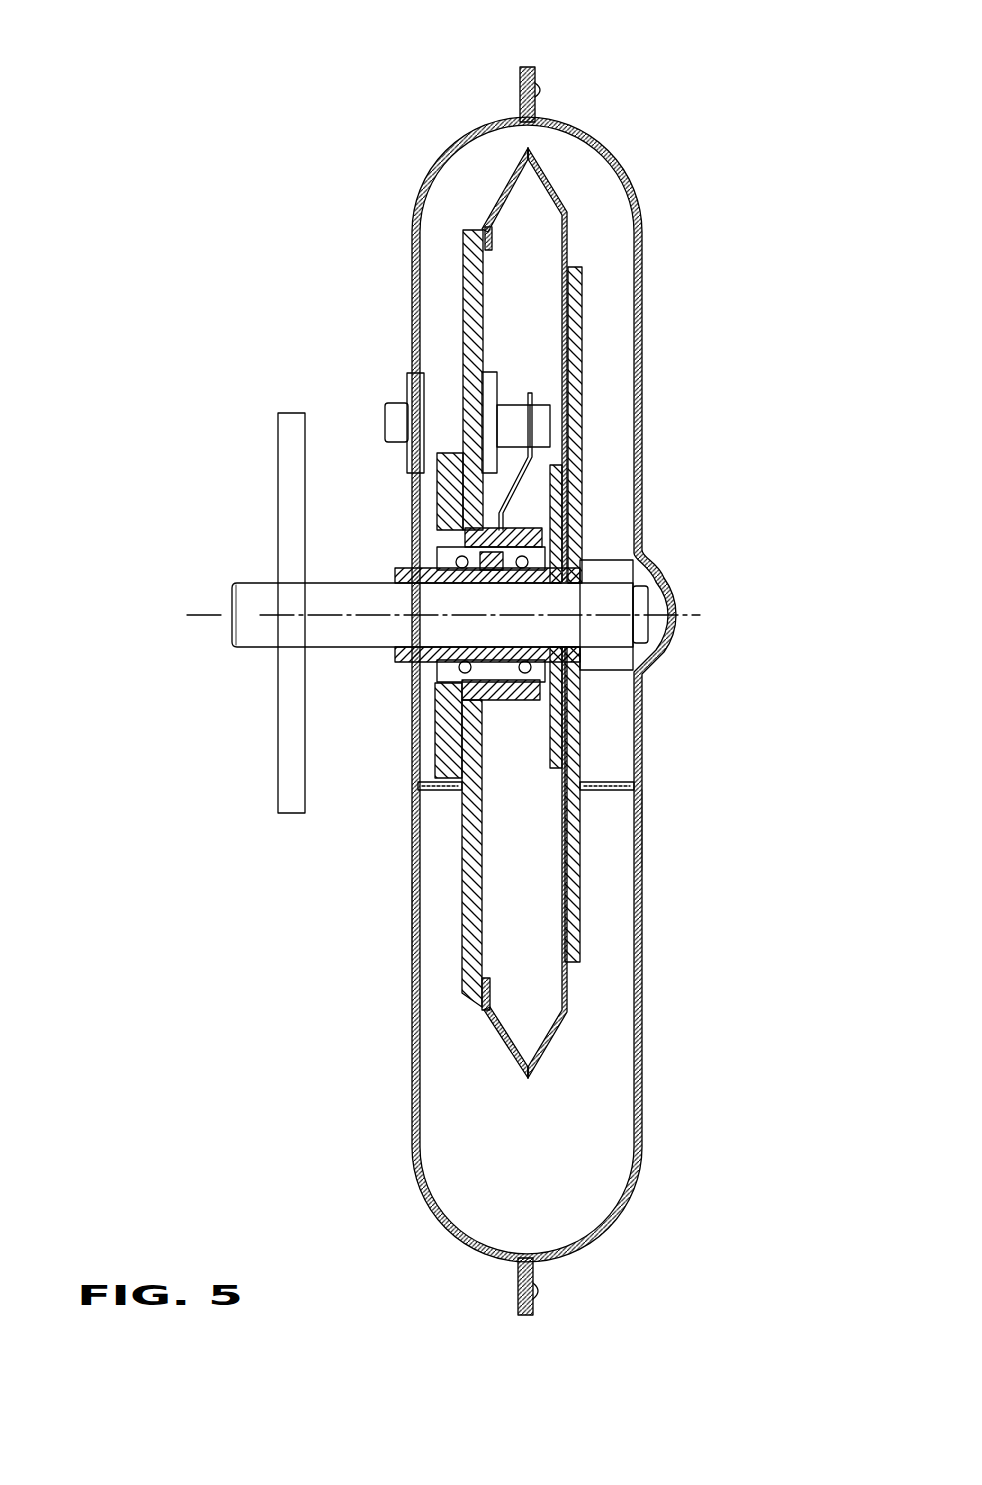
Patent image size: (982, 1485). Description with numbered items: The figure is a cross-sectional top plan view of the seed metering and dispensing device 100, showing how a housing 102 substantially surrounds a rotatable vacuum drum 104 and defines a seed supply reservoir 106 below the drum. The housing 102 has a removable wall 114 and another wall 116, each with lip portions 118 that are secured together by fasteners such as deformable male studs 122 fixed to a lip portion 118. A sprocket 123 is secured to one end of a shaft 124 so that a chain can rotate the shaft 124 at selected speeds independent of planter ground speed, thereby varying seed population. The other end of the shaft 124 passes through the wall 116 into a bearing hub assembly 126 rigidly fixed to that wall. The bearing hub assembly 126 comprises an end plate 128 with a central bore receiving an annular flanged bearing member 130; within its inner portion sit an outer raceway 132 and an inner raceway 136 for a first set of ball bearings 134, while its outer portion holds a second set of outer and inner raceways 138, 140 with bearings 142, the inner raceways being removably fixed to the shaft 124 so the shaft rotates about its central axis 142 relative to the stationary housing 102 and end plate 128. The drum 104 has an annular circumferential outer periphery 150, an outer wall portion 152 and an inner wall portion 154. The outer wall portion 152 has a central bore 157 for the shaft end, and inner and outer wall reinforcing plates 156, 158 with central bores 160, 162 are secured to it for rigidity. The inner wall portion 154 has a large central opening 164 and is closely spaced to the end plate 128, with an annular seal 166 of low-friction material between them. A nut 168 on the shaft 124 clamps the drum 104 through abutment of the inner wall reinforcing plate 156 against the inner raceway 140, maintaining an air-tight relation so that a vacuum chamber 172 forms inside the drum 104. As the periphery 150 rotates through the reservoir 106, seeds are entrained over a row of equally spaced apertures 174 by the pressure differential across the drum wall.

The seed metering and dispensing device 100 is at (733, 125).
The housing 102 is at (645, 307).
The rotatable vacuum drum 104 is at (575, 220).
The seed supply reservoir 106 is at (610, 1140).
The removable wall 114 is at (640, 833).
The wall 116 is at (412, 915).
The lip portion 118 is at (530, 66).
The deformable male stud 122 is at (543, 88).
The sprocket 123 is at (278, 432).
The shaft 124 is at (247, 583).
The bearing hub assembly 126 is at (383, 667).
The end plate 128 is at (477, 305).
The annular flanged bearing member 130 is at (514, 703).
The outer raceway 132 is at (440, 527).
The first set of ball bearings 134 is at (440, 557).
The inner raceway 136 is at (400, 570).
The outer raceway 138 is at (527, 548).
The inner raceway 140 is at (565, 572).
The bearings 142 is at (207, 615).
The annular circumferential outer periphery 150 is at (555, 197).
The outer wall portion 152 is at (568, 242).
The inner wall portion 154 is at (492, 232).
The inner wall reinforcing plate 156 is at (556, 473).
The central bore 157 is at (567, 586).
The outer wall reinforcing plate 158 is at (573, 392).
The central bore 160 is at (572, 627).
The central bore 162 is at (585, 637).
The large central opening 164 is at (485, 250).
The annular seal 166 is at (490, 230).
The nut 168 is at (617, 622).
The vacuum chamber 172 is at (547, 353).
The apertures 174 is at (543, 173).